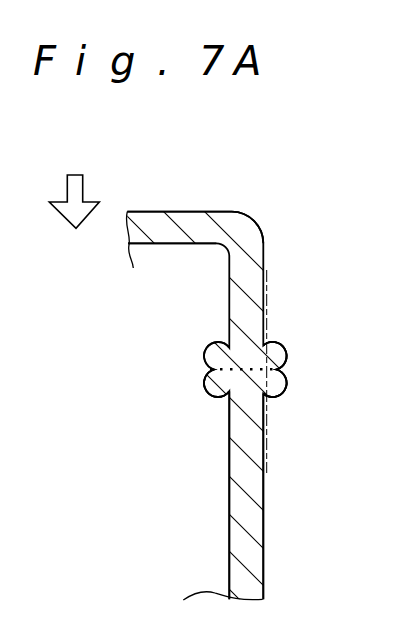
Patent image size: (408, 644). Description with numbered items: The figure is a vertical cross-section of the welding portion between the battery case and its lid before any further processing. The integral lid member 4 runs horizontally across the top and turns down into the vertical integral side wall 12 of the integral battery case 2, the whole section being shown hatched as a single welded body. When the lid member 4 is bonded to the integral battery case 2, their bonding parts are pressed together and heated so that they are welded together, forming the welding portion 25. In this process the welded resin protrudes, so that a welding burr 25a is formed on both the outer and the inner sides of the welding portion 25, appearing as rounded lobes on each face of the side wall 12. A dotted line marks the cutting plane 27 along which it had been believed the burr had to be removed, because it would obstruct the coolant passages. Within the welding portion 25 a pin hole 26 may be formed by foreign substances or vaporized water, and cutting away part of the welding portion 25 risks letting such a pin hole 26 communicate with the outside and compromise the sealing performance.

The integral battery case 2 is at (270, 490).
The integral lid member 4 is at (192, 227).
The integral side wall 12 is at (248, 522).
The welding portion 25 is at (207, 350).
The welding burr 25a is at (287, 357).
The pin hole 26 is at (212, 400).
The cutting plane 27 is at (267, 412).